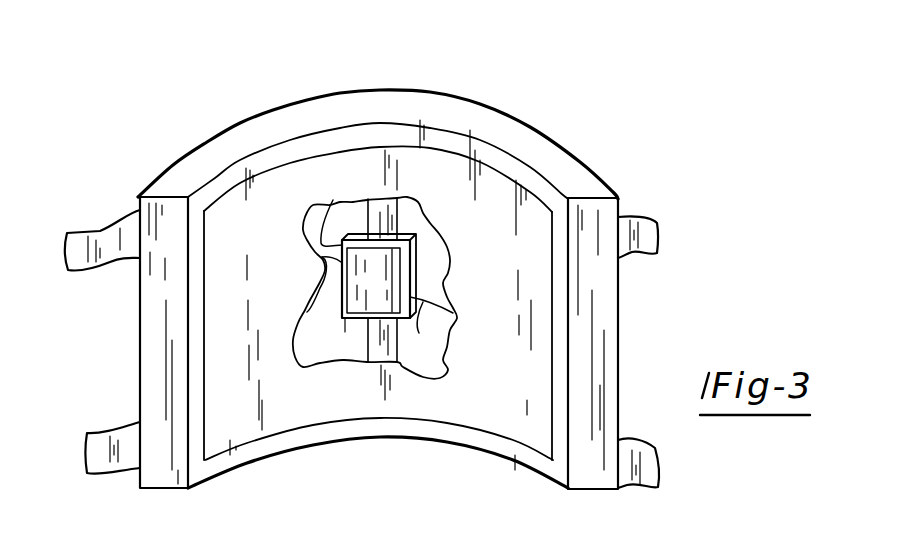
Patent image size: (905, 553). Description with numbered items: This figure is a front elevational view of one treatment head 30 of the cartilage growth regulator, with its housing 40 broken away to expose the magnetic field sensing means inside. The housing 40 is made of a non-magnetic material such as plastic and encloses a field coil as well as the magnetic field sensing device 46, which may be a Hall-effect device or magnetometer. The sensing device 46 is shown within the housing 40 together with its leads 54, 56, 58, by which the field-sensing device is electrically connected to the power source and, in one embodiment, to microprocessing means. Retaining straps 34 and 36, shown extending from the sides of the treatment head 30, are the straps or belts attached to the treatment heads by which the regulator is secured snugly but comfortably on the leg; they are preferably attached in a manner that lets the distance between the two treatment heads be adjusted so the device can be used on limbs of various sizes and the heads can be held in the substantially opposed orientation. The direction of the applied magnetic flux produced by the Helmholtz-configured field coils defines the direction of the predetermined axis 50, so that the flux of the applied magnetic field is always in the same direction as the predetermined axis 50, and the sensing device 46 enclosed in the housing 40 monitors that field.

The treatment head 30 is at (380, 85).
The retaining strap 34 is at (95, 229).
The retaining strap 36 is at (112, 473).
The housing 40 is at (150, 332).
The magnetic field sensing device 46 is at (428, 251).
The predetermined axis 50 is at (433, 297).
The lead 54 is at (315, 325).
The lead 56 is at (340, 210).
The lead 58 is at (425, 316).